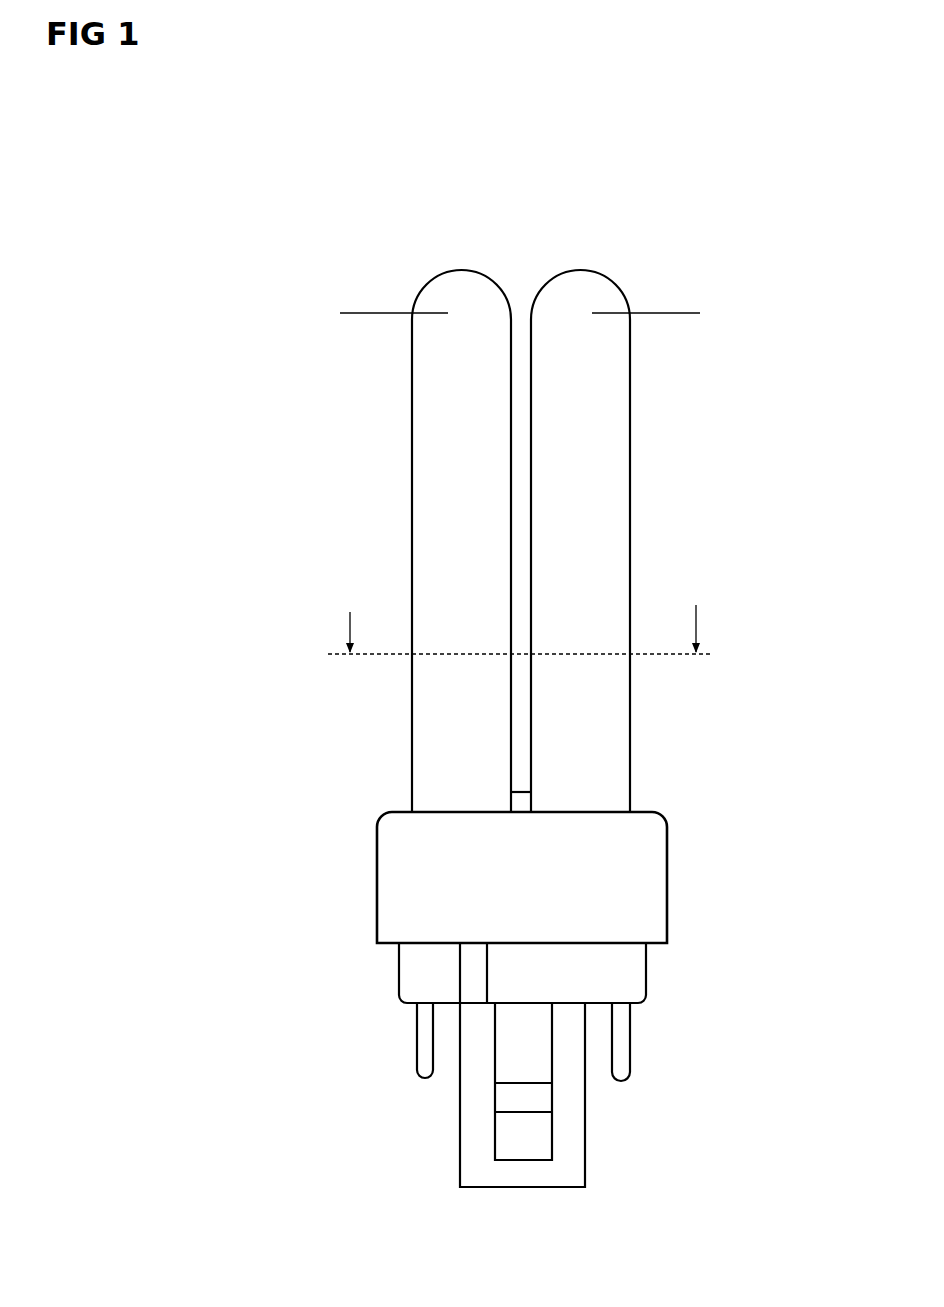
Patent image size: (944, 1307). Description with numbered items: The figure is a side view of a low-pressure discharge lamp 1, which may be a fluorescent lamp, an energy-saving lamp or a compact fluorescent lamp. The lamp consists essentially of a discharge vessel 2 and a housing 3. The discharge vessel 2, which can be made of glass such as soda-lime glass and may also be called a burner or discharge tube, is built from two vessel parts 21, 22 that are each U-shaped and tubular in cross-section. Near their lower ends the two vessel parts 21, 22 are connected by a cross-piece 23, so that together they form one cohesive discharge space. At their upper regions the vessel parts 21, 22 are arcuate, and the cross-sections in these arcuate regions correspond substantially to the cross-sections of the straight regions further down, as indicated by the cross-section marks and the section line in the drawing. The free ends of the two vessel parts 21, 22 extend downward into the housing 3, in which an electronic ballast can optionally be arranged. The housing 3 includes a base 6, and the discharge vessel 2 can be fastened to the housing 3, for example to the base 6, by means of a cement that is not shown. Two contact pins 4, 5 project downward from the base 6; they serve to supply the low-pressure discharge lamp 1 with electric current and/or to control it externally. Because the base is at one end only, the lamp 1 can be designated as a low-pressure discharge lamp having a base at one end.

The low-pressure discharge lamp 1 is at (772, 594).
The discharge vessel 2 is at (524, 260).
The vessel part 21 is at (630, 507).
The vessel part 22 is at (412, 507).
The cross-piece 23 is at (528, 802).
The housing 3 is at (648, 880).
The contact pin 4 is at (427, 1053).
The contact pin 5 is at (620, 1052).
The base 6 is at (425, 972).